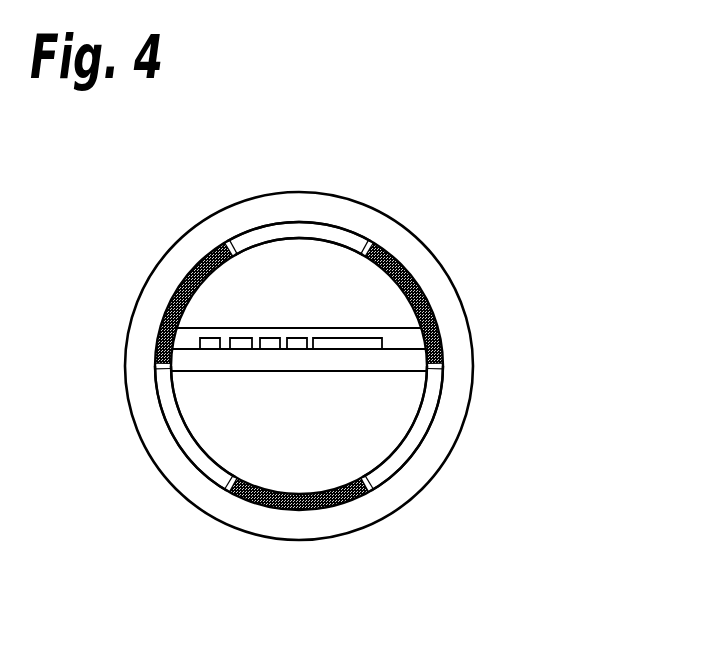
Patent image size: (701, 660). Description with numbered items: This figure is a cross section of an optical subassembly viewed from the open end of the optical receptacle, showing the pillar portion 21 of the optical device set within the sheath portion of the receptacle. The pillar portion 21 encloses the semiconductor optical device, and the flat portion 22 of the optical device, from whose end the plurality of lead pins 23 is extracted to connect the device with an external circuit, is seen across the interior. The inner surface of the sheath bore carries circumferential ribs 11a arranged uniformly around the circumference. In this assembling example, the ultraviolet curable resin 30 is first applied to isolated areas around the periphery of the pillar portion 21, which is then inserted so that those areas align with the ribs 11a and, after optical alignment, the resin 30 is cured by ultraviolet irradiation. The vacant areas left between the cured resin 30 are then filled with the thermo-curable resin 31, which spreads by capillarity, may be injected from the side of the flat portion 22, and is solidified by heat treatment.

The circumferential ribs 11a is at (377, 244).
The pillar portion 21 is at (233, 437).
The flat portion 22 is at (295, 360).
The lead pins 23 is at (347, 343).
The ultraviolet curable resin 30 is at (430, 287).
The thermo-curable resin 31 is at (290, 227).